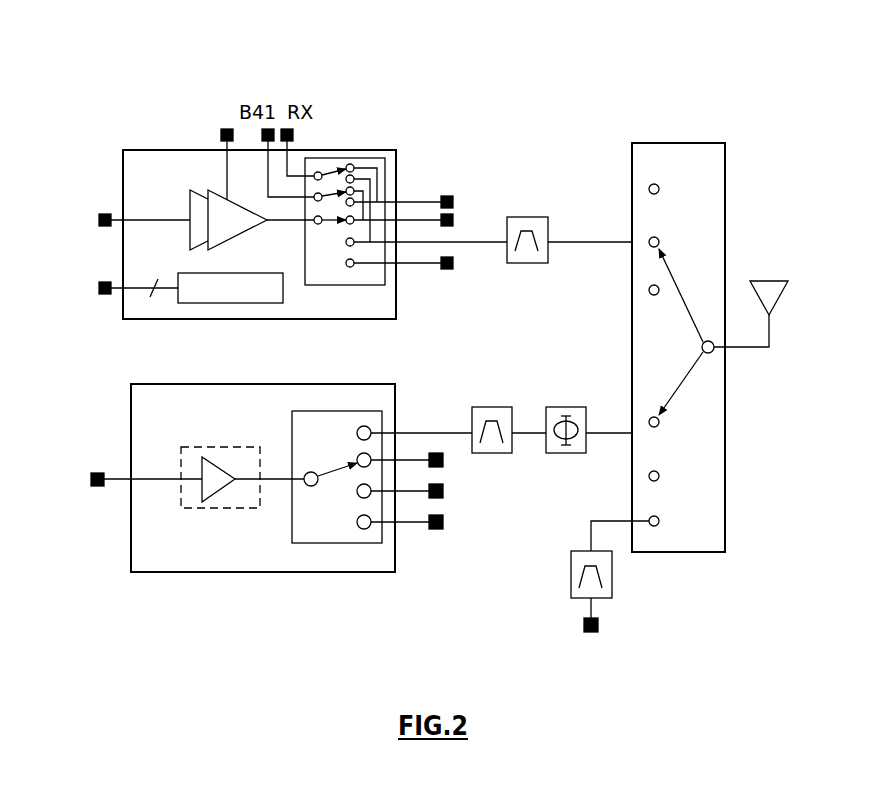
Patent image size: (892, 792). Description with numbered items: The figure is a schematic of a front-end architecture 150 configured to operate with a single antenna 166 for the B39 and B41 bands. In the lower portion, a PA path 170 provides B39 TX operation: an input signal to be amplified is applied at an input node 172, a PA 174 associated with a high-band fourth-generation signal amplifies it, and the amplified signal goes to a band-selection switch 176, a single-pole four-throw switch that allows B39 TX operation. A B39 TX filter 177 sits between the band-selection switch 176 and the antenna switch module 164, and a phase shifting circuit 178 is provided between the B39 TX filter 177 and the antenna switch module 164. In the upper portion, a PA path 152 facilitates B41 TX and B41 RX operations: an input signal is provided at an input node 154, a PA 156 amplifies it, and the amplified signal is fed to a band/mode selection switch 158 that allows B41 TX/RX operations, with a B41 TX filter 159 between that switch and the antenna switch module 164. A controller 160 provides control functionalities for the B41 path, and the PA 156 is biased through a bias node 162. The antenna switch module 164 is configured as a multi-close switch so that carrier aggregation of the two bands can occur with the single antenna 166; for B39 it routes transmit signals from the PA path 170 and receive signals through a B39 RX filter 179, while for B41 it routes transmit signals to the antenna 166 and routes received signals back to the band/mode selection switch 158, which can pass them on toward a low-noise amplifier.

The front-end architecture 150 is at (477, 70).
The PA path 152 is at (150, 150).
The input node 154 is at (105, 214).
The PA 156 is at (200, 186).
The band/mode selection switch 158 is at (377, 285).
The B41 TX filter 159 is at (527, 263).
The controller 160 is at (230, 273).
The bias node 162 is at (221, 131).
The antenna switch module 164 is at (675, 143).
The antenna 166 is at (780, 300).
The PA path 170 is at (160, 384).
The input node 172 is at (97, 473).
The PA 174 is at (210, 508).
The band-selection switch 176 is at (292, 511).
The B39 TX filter 177 is at (500, 453).
The phase shifting circuit 178 is at (572, 453).
The B39 RX filter 179 is at (612, 590).